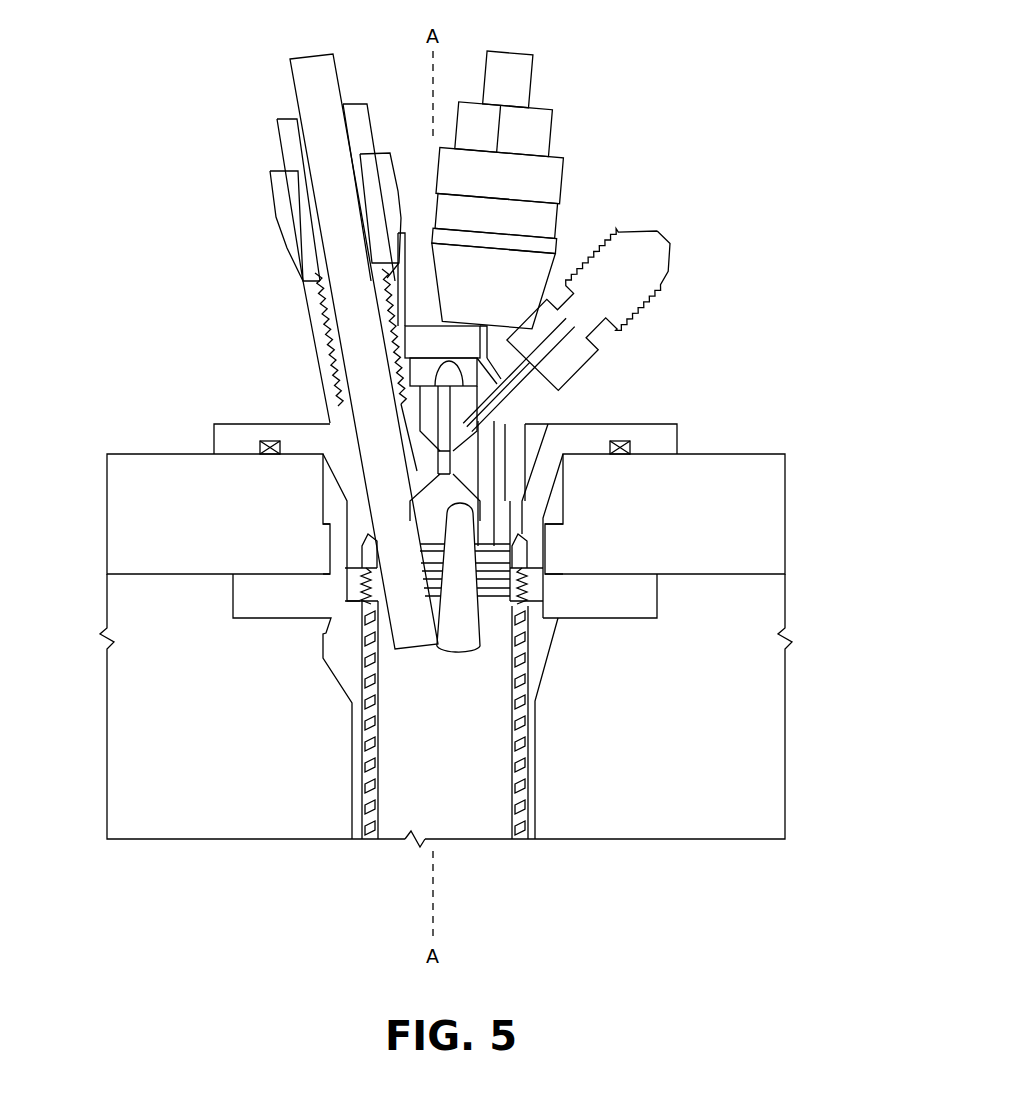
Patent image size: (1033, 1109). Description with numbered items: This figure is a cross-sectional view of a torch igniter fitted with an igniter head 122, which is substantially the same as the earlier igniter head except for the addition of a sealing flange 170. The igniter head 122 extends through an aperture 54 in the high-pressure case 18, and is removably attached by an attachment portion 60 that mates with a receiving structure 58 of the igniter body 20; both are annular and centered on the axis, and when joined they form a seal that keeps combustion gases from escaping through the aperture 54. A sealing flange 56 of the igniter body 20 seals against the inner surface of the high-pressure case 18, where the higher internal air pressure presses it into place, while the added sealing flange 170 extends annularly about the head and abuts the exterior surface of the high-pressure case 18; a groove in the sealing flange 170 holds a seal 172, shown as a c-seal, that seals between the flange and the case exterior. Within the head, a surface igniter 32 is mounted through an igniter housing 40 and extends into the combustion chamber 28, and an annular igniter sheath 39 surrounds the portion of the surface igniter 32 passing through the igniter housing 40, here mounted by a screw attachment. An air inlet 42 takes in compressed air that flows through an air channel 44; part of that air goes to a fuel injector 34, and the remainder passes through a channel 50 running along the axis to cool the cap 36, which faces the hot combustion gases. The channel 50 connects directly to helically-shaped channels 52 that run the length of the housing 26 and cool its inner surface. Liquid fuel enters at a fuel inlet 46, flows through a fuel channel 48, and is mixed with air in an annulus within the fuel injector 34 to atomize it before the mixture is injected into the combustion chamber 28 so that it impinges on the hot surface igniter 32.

The high-pressure case 18 is at (446, 646).
The igniter body 20 is at (349, 718).
The housing 26 is at (538, 729).
The combustion chamber 28 is at (428, 769).
The surface igniter 32 is at (303, 57).
The fuel injector 34 is at (330, 424).
The cap 36 is at (404, 487).
The igniter sheath 39 is at (287, 115).
The igniter housing 40 is at (293, 290).
The air inlet 42 is at (449, 309).
The air channel 44 is at (498, 352).
The fuel inlet 46 is at (633, 230).
The fuel channel 48 is at (566, 357).
The channel 50 is at (527, 519).
The channels 52 is at (532, 614).
The aperture 54 is at (570, 472).
The sealing flange 56 is at (262, 620).
The receiving structure 58 is at (570, 563).
The attachment portion 60 is at (340, 545).
The igniter head 122 is at (303, 330).
The sealing flange 170 is at (682, 432).
The seal 172 is at (263, 460).